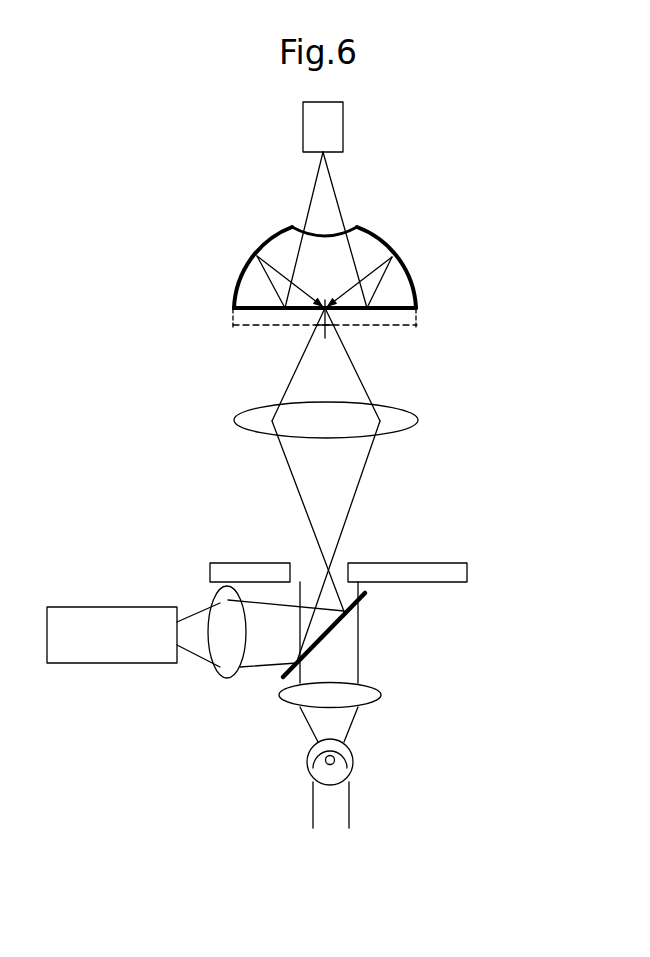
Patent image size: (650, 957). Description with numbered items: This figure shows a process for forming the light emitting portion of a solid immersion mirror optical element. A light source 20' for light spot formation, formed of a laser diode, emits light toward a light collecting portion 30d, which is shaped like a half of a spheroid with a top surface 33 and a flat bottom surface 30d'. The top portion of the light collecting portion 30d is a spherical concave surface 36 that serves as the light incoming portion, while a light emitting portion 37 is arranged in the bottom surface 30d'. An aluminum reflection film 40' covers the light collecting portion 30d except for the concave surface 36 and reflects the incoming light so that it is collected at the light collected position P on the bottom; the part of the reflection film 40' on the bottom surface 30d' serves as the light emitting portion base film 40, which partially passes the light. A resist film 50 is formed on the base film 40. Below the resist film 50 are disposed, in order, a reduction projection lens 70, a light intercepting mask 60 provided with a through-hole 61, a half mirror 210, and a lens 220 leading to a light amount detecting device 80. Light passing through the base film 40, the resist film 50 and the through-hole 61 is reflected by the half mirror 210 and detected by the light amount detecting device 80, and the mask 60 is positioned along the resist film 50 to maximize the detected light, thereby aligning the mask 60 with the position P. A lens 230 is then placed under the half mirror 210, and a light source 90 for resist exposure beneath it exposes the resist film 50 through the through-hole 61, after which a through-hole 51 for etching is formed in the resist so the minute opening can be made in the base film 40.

The light source for light spot formation 20' is at (351, 127).
The top surface 33 is at (382, 238).
The concave surface 36 is at (340, 226).
The light collecting portion 30d is at (250, 263).
The reflection film 40' is at (400, 301).
The light collected position P is at (325, 300).
The light emitting portion base film 40 is at (264, 338).
The resist film 50 is at (233, 327).
The through-hole for etching 51 is at (324, 334).
The light emitting portion 37 is at (328, 312).
The bottom surface 30d' is at (264, 355).
The reduction projection lens 70 is at (407, 430).
The light intercepting mask 60 is at (407, 560).
The through-hole 61 is at (335, 568).
The light amount detecting device 80 is at (92, 607).
The lens 220 is at (220, 675).
The half mirror 210 is at (335, 630).
The lens 230 is at (380, 698).
The light source for resist exposure 90 is at (354, 762).